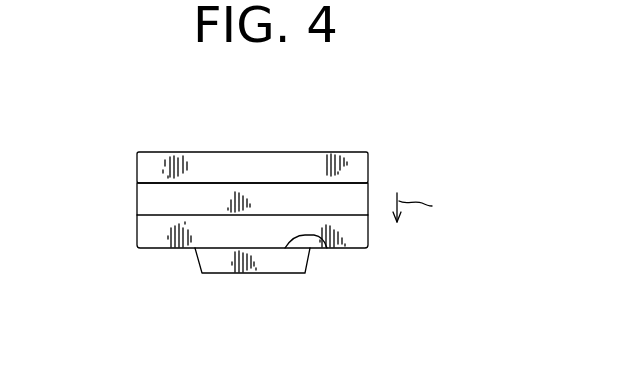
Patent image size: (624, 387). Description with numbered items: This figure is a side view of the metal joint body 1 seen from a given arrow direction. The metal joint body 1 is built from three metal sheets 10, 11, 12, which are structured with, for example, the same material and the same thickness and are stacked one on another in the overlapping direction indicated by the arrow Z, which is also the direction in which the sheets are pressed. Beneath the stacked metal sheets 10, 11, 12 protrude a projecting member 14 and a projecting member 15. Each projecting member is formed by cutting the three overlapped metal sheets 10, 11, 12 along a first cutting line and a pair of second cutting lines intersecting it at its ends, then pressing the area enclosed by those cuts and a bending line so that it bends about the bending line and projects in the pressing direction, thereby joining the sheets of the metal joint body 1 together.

The metal joint body 1 is at (358, 118).
The metal sheet 10 is at (266, 165).
The metal sheet 11 is at (152, 200).
The metal sheet 12 is at (152, 240).
The projecting member 14 is at (330, 250).
The projecting member 15 is at (255, 268).